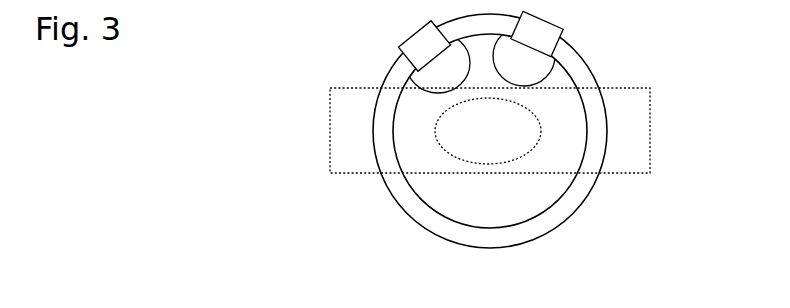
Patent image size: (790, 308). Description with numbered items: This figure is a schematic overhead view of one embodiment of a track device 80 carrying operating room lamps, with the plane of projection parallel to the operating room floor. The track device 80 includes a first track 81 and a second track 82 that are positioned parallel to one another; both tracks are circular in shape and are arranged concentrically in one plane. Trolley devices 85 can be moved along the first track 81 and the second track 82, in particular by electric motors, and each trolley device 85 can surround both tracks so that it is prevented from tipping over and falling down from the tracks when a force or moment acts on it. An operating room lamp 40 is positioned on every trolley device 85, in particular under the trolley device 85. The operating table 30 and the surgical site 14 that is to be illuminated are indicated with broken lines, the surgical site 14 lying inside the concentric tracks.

The holding device 80 is at (289, 53).
The outer ring 81 is at (395, 200).
The inner ring 82 is at (400, 172).
The clamping element 85 is at (398, 46).
The cable 40 is at (418, 91).
The housing 30 is at (646, 96).
The shaft 14 is at (523, 152).